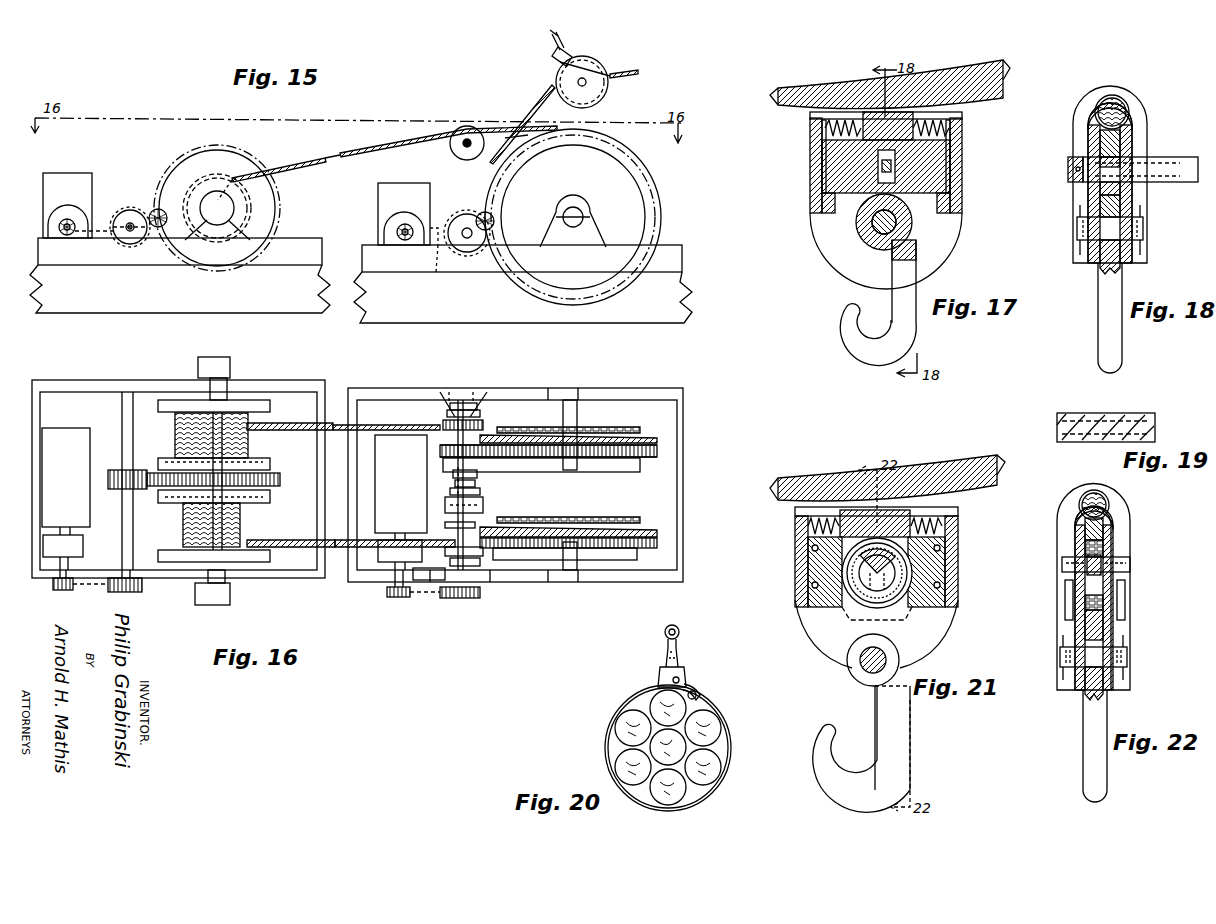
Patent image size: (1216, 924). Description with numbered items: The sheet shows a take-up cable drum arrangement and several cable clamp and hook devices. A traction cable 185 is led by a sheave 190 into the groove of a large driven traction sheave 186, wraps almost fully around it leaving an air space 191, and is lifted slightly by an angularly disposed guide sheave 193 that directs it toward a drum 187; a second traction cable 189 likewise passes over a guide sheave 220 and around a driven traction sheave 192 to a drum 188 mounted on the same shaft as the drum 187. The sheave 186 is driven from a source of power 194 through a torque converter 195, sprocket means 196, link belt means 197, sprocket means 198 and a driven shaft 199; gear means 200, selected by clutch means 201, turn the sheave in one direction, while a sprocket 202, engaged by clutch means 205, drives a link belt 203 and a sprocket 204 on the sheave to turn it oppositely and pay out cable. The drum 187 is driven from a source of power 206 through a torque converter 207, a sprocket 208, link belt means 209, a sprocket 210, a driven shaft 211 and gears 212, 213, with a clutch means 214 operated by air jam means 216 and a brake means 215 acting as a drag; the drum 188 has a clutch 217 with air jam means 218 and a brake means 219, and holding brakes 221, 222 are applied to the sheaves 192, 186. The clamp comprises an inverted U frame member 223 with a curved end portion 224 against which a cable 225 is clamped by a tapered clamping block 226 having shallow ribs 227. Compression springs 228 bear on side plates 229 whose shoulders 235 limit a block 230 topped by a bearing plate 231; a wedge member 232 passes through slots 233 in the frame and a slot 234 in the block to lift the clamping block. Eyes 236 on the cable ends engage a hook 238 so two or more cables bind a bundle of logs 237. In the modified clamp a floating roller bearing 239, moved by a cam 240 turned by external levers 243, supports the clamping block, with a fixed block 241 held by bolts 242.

In FIG. 15, the traction cable 185 is at (339, 150).
In FIG. 16, the traction cable 185 is at (300, 542).
In FIG. 15, the driven traction sheave 186 is at (657, 193).
In FIG. 16, the driven traction sheave 186 is at (641, 535).
In FIG. 15, the drum 187 is at (238, 176).
In FIG. 16, the drum 187 is at (185, 547).
In FIG. 16, the drum 188 is at (256, 431).
In FIG. 16, the traction cable 189 is at (175, 430).
In FIG. 15, the sheave 190 is at (606, 91).
In FIG. 15, the air space 191 is at (529, 137).
In FIG. 16, the traction sheave 192 is at (660, 455).
In FIG. 15, the guide sheave 193 is at (467, 127).
In FIG. 16, the guide sheave 193 is at (466, 550).
In FIG. 15, the source of power 194 is at (390, 186).
In FIG. 16, the source of power 194 is at (405, 440).
In FIG. 15, the torque converter 195 is at (382, 230).
In FIG. 16, the torque converter 195 is at (385, 560).
In FIG. 15, the sprocket means 196 is at (405, 241).
In FIG. 16, the sprocket means 196 is at (394, 597).
In FIG. 15, the link belt means 197 is at (438, 250).
In FIG. 16, the link belt means 197 is at (425, 594).
In FIG. 15, the sprocket means 198 is at (468, 242).
In FIG. 16, the sprocket means 198 is at (452, 598).
In FIG. 15, the driven shaft 199 is at (405, 224).
In FIG. 16, the driven shaft 199 is at (452, 479).
In FIG. 15, the gear means 200 is at (486, 213).
In FIG. 16, the gear means 200 is at (500, 458).
In FIG. 16, the clutch means 201 is at (447, 466).
In FIG. 16, the sprocket 202 is at (487, 424).
In FIG. 16, the link belt 203 is at (508, 424).
In FIG. 16, the sprocket 204 is at (640, 430).
In FIG. 16, the clutch means 205 is at (458, 405).
In FIG. 15, the source of power 206 is at (80, 173).
In FIG. 16, the source of power 206 is at (66, 428).
In FIG. 15, the torque converter 207 is at (68, 206).
In FIG. 16, the torque converter 207 is at (83, 553).
In FIG. 15, the sprocket 208 is at (68, 236).
In FIG. 16, the sprocket 208 is at (57, 590).
In FIG. 15, the link belt means 209 is at (105, 212).
In FIG. 16, the link belt means 209 is at (92, 590).
In FIG. 15, the sprocket 210 is at (127, 238).
In FIG. 16, the sprocket 210 is at (136, 587).
In FIG. 15, the driven shaft 211 is at (132, 232).
In FIG. 16, the driven shaft 211 is at (124, 508).
In FIG. 15, the gear 212 is at (110, 233).
In FIG. 16, the gear 212 is at (115, 470).
In FIG. 15, the gear 213 is at (161, 222).
In FIG. 16, the gear 213 is at (268, 467).
In FIG. 16, the clutch means 214 is at (270, 497).
In FIG. 15, the brake means 215 is at (272, 199).
In FIG. 16, the brake means 215 is at (270, 557).
In FIG. 15, the air jam operating means 216 is at (234, 208).
In FIG. 16, the air jam operating means 216 is at (230, 596).
In FIG. 16, the clutch 217 is at (262, 451).
In FIG. 16, the air jam means 218 is at (230, 368).
In FIG. 16, the brake means 219 is at (270, 407).
In FIG. 16, the guide sheave 220 is at (476, 402).
In FIG. 16, the brake 221 is at (605, 470).
In FIG. 15, the brake 222 is at (632, 182).
In FIG. 16, the brake 222 is at (610, 560).
In FIG. 17, the frame member 223 is at (944, 238).
In FIG. 18, the frame member 223 is at (1133, 267).
In FIG. 20, the frame member 223 is at (680, 673).
In FIG. 21, the frame member 223 is at (922, 647).
In FIG. 22, the frame member 223 is at (1112, 697).
In FIG. 17, the curved end portion 224 is at (935, 78).
In FIG. 18, the curved end portion 224 is at (1109, 96).
In FIG. 20, the curved end portion 224 is at (660, 678).
In FIG. 21, the curved end portion 224 is at (834, 478).
In FIG. 22, the curved end portion 224 is at (1110, 503).
In FIG. 17, the cable 225 is at (988, 83).
In FIG. 18, the cable 225 is at (1127, 107).
In FIG. 20, the cable 225 is at (667, 658).
In FIG. 21, the cable 225 is at (960, 477).
In FIG. 22, the cable 225 is at (1107, 512).
In FIG. 17, the cable clamping block 226 is at (883, 117).
In FIG. 18, the cable clamping block 226 is at (1115, 137).
In FIG. 19, the cable clamping block 226 is at (1158, 432).
In FIG. 21, the cable clamping block 226 is at (895, 517).
In FIG. 22, the cable clamping block 226 is at (1113, 527).
In FIG. 17, the shallow ribs 227 is at (968, 109).
In FIG. 19, the shallow ribs 227 is at (1128, 422).
In FIG. 21, the shallow ribs 227 is at (953, 511).
In FIG. 17, the compression spring 228 is at (958, 124).
In FIG. 21, the compression spring 228 is at (960, 523).
In FIG. 17, the side plates 229 is at (962, 184).
In FIG. 17, the block 230 is at (953, 168).
In FIG. 18, the block 230 is at (1140, 186).
In FIG. 17, the plate 231 is at (812, 161).
In FIG. 18, the plate 231 is at (1138, 132).
In FIG. 17, the wedge member 232 is at (953, 151).
In FIG. 18, the wedge member 232 is at (1195, 183).
In FIG. 18, the slots 233 is at (1085, 153).
In FIG. 17, the slot 234 is at (852, 207).
In FIG. 18, the slot 234 is at (1087, 197).
In FIG. 17, the shoulders 235 is at (963, 206).
In FIG. 20, the eye 236 is at (680, 633).
In FIG. 20, the bundle of logs 237 is at (742, 729).
In FIG. 17, the hook 238 is at (880, 364).
In FIG. 18, the hook 238 is at (1112, 354).
In FIG. 20, the hook 238 is at (693, 684).
In FIG. 21, the hook 238 is at (835, 768).
In FIG. 22, the hook 238 is at (1092, 768).
In FIG. 21, the floating roller bearing 239 is at (904, 552).
In FIG. 22, the floating roller bearing 239 is at (1117, 546).
In FIG. 21, the cam 240 is at (890, 567).
In FIG. 22, the cam 240 is at (1117, 565).
In FIG. 21, the fixed block 241 is at (923, 609).
In FIG. 22, the fixed block 241 is at (1122, 638).
In FIG. 21, the bolts 242 is at (807, 553).
In FIG. 21, the levers 243 is at (908, 624).
In FIG. 22, the levers 243 is at (1126, 613).